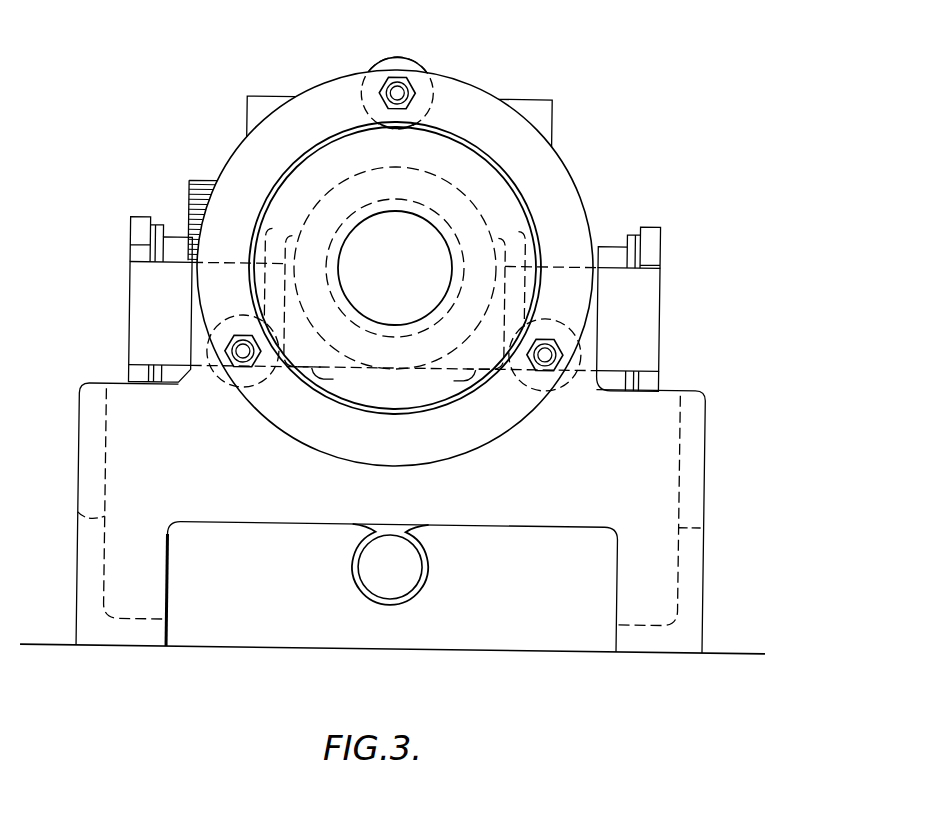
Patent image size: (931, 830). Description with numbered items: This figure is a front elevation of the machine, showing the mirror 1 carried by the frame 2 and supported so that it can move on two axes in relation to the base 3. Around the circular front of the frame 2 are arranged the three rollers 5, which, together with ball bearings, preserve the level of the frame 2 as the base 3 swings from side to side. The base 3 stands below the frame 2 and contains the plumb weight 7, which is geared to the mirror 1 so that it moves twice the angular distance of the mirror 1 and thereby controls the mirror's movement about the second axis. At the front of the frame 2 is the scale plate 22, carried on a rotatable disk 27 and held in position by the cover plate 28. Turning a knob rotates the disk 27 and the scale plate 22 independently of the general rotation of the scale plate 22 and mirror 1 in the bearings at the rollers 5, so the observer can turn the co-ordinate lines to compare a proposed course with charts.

The mirror 1 is at (540, 95).
The frame 2 is at (129, 321).
The base 3 is at (79, 475).
The rollers 5 is at (402, 54).
The plumb weight 7 is at (436, 572).
The scale plate 22 is at (411, 234).
The disk 27 is at (494, 222).
The cover plate 28 is at (513, 184).